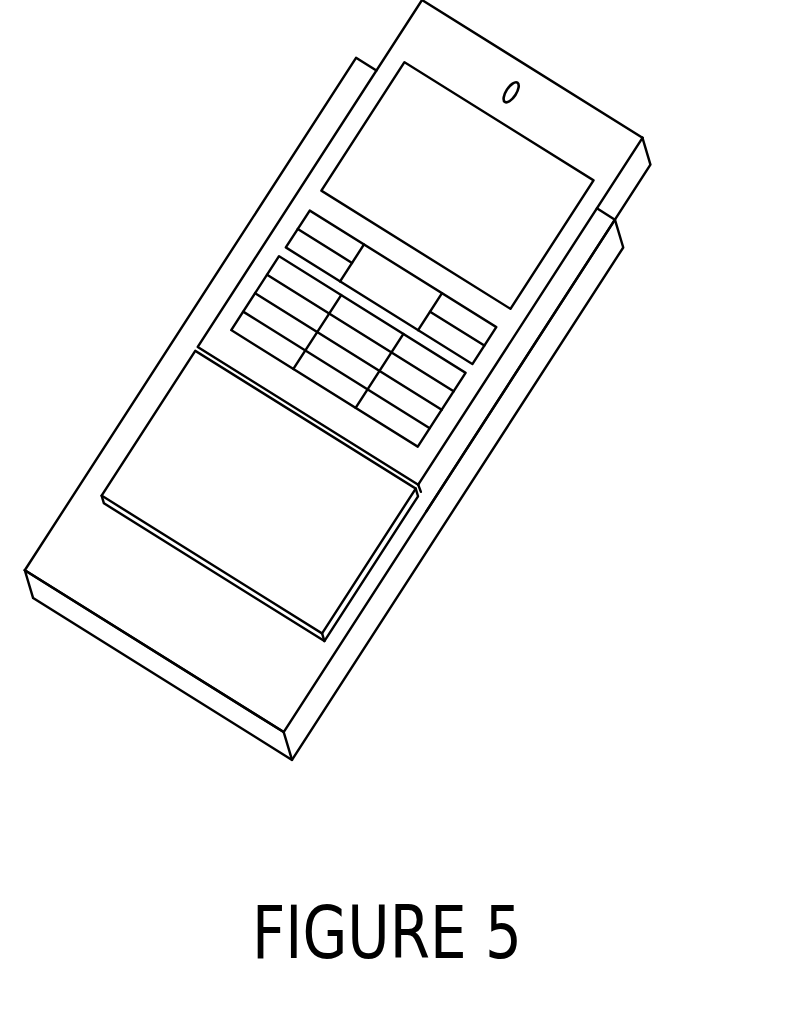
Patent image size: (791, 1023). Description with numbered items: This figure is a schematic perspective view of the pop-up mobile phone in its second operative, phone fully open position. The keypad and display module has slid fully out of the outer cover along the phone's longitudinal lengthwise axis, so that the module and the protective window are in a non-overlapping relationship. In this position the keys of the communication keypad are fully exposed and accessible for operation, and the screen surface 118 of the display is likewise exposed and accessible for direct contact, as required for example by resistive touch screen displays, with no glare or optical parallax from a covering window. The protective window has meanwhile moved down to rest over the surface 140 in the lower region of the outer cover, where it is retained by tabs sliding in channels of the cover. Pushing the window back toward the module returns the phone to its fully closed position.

The screen surface 118 is at (457, 185).
The surface 140 is at (109, 648).